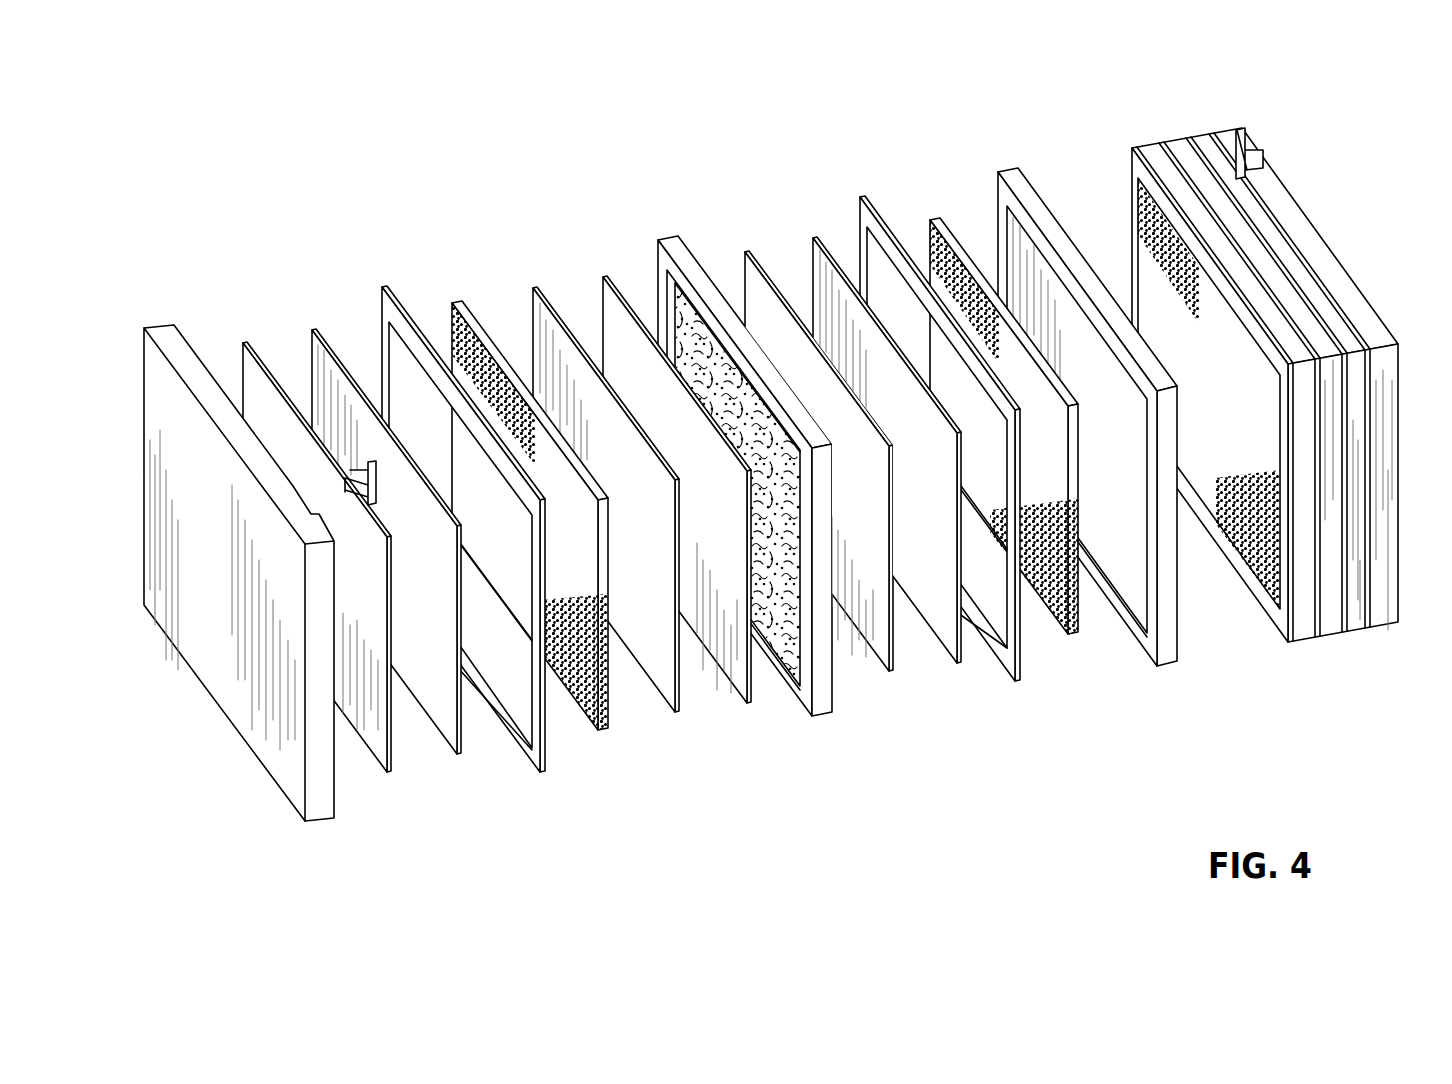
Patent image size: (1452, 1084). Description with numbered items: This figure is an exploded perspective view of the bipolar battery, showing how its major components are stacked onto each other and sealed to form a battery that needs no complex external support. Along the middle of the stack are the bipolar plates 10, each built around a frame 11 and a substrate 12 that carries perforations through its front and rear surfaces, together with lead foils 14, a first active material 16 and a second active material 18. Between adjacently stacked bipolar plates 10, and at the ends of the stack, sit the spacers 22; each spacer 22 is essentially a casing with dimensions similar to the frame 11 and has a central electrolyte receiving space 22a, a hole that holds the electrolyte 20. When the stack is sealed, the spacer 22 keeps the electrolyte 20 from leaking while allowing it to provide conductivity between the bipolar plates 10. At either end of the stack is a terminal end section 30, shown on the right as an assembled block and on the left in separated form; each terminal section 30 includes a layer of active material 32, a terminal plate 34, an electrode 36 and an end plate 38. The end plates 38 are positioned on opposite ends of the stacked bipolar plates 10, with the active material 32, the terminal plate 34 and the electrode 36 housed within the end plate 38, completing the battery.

The bipolar plate 10 is at (1150, 146).
The frame 11 is at (817, 716).
The substrate 12 is at (677, 297).
The lead foils 14 is at (890, 672).
The first active material 16 is at (1020, 247).
The second active material 18 is at (813, 238).
The electrolyte 20 is at (1246, 548).
The spacer 22 is at (807, 475).
The electrolyte receiving space 22a is at (408, 322).
The terminal end section 30 is at (127, 300).
The layer of active material 32 is at (455, 755).
The terminal plate 34 is at (387, 773).
The electrode 36 is at (1247, 127).
The end plate 38 is at (320, 820).